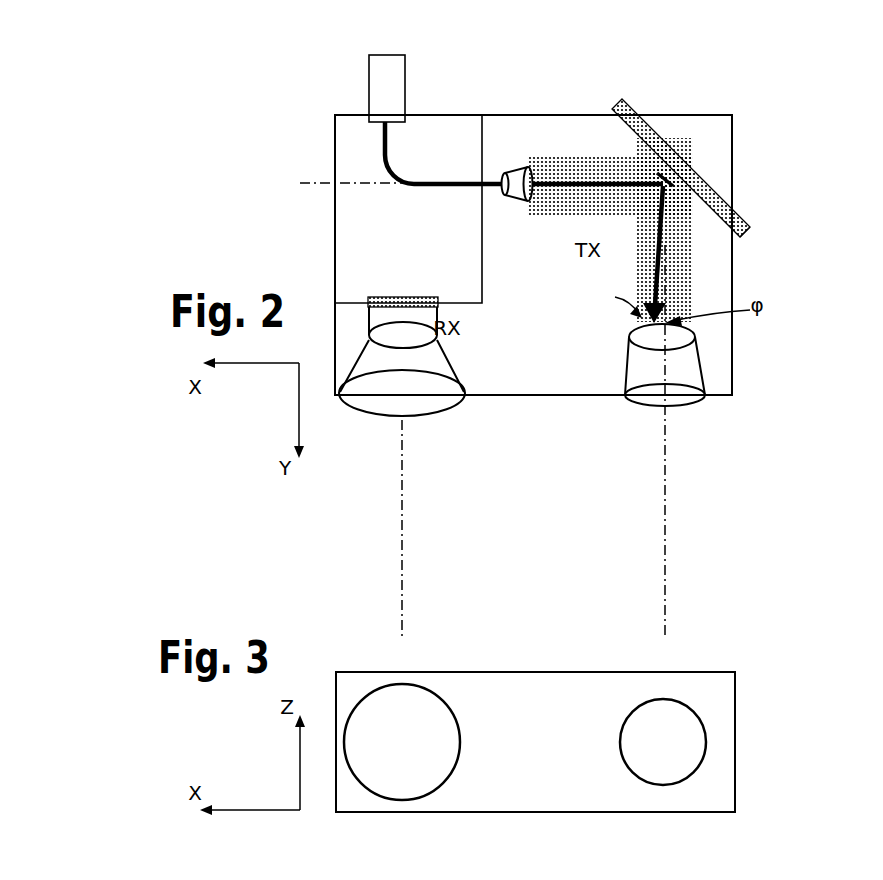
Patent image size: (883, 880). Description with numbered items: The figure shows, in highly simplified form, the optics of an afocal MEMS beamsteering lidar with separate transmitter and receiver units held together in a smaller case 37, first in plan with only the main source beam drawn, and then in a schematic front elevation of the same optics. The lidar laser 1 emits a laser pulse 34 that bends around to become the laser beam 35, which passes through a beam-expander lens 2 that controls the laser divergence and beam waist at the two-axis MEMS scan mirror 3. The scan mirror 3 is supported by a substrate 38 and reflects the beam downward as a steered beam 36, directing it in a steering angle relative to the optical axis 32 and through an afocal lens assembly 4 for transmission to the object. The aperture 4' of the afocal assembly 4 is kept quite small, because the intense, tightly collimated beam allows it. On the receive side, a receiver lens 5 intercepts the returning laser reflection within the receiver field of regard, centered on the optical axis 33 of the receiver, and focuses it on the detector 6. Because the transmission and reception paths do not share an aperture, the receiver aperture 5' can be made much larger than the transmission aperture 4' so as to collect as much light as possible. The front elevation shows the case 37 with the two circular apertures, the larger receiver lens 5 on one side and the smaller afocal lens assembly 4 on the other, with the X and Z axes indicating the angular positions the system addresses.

In FIG. 2, the lidar laser 1 is at (380, 83).
In FIG. 2, the beam-expander lens 2 is at (517, 194).
In FIG. 2, the MEMS scan mirror 3 is at (658, 173).
In FIG. 2, the afocal lens assembly 4 is at (658, 359).
In FIG. 3, the afocal lens assembly 4 is at (664, 739).
In FIG. 2, the aperture of the afocal assembly 4' is at (698, 418).
In FIG. 2, the receiver lens 5 is at (402, 349).
In FIG. 3, the receiver lens 5 is at (408, 742).
In FIG. 2, the receiver aperture 5' is at (423, 417).
In FIG. 2, the detector 6 is at (387, 295).
In FIG. 2, the optical axis 32 is at (680, 441).
In FIG. 2, the optical axis of the receiver 33 is at (417, 528).
In FIG. 2, the laser pulse 34 is at (443, 153).
In FIG. 2, the laser beam 35 is at (553, 184).
In FIG. 2, the steered beam 36 is at (647, 254).
In FIG. 2, the case 37 is at (533, 255).
In FIG. 3, the case 37 is at (549, 742).
In FIG. 2, the substrate 38 is at (757, 235).